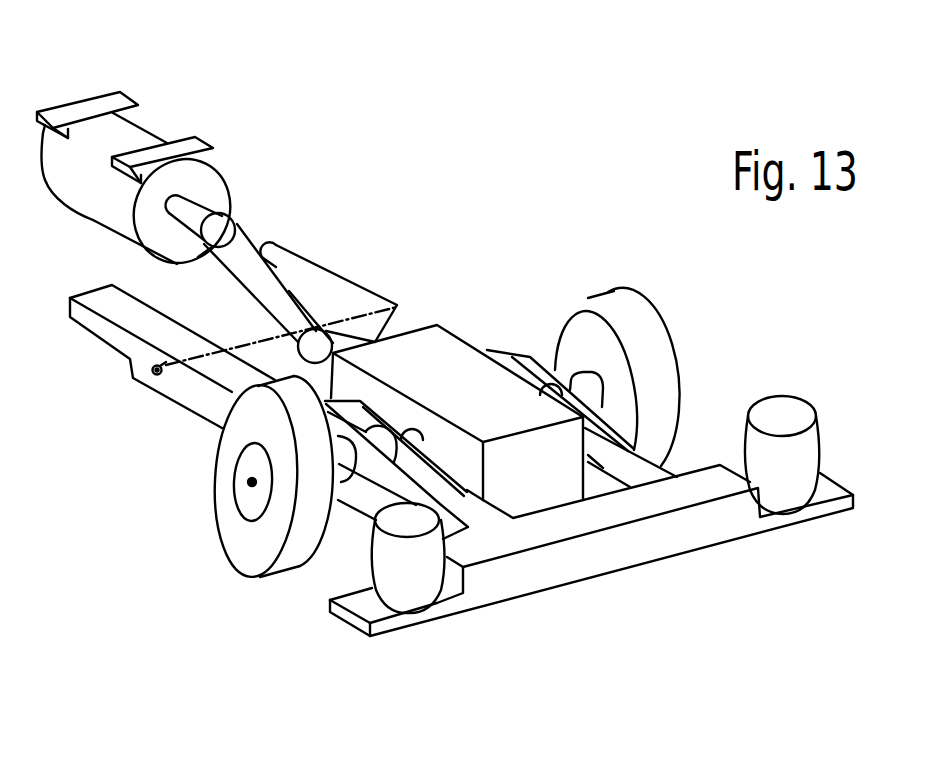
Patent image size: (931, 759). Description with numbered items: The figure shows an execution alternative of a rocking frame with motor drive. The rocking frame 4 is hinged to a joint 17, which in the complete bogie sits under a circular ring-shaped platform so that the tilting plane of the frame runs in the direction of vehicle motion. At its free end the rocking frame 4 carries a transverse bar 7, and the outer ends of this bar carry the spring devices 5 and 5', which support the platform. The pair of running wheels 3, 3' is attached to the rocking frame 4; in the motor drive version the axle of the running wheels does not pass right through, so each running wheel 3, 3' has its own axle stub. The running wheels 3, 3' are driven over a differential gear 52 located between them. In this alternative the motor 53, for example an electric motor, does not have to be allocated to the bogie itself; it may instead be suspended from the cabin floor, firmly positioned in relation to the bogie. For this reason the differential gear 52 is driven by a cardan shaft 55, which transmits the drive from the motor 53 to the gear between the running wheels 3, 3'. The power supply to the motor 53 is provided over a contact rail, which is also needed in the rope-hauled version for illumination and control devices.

The running wheel 3 is at (191, 498).
The running wheel 3' is at (617, 307).
The rocking frame 4 is at (266, 250).
The spring device 5 is at (314, 606).
The spring device 5' is at (789, 513).
The transverse bar 7 is at (560, 572).
The joint 17 is at (152, 375).
The differential gear 52 is at (452, 348).
The motor 53 is at (125, 141).
The cardan shaft 55 is at (267, 277).